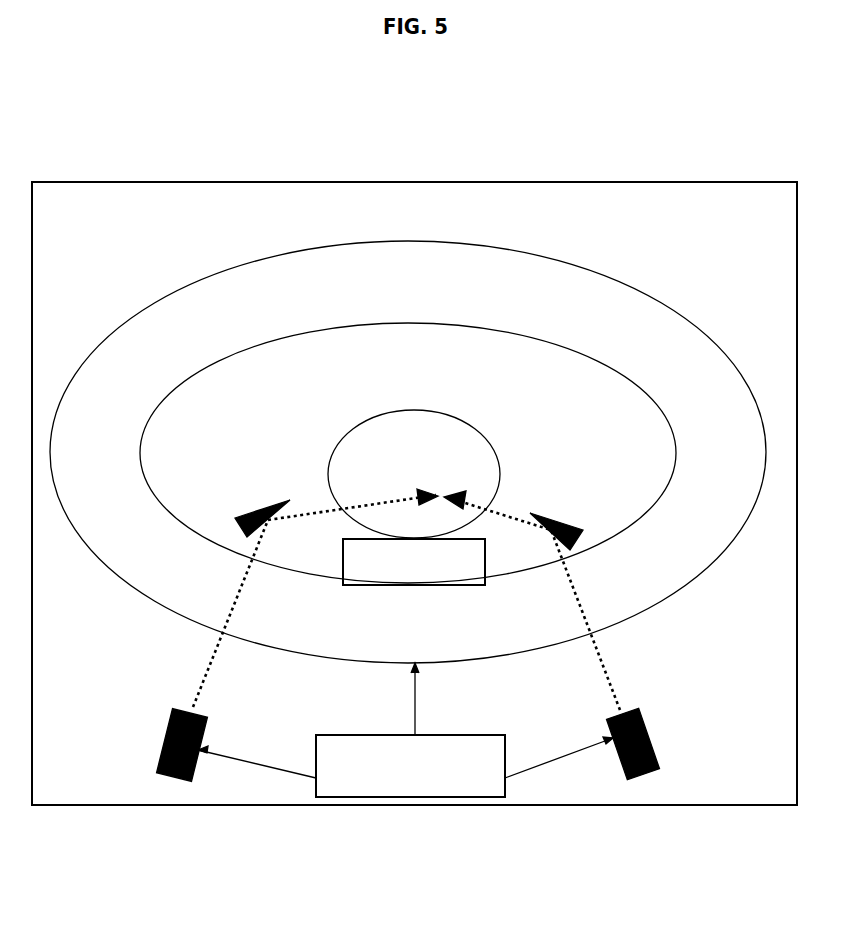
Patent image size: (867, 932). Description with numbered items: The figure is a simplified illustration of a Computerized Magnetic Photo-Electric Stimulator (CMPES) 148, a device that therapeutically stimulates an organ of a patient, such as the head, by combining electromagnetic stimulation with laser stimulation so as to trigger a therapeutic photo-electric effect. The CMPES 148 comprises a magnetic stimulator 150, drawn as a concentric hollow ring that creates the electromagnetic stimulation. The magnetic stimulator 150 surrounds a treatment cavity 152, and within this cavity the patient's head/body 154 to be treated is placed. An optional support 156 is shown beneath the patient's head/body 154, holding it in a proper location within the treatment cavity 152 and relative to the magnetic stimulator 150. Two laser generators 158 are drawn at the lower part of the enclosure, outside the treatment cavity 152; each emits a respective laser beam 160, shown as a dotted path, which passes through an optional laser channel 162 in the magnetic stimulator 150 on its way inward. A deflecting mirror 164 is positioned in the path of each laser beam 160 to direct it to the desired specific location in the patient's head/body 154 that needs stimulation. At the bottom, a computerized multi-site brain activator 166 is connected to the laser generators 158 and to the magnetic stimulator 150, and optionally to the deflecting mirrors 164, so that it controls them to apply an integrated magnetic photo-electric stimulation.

The Computerized Magnetic Photo-Electric Stimulator (CMPES) 148 is at (745, 182).
The magnetic stimulator 150 is at (478, 243).
The treatment cavity 152 is at (288, 352).
The patient's head/body 154 is at (490, 443).
The support 156 is at (487, 556).
The laser generator 158 is at (207, 741).
The laser beam 160 is at (200, 697).
The laser channel 162 is at (222, 610).
The deflecting mirror 164 is at (262, 510).
The computerized multi-site brain activator 166 is at (460, 735).